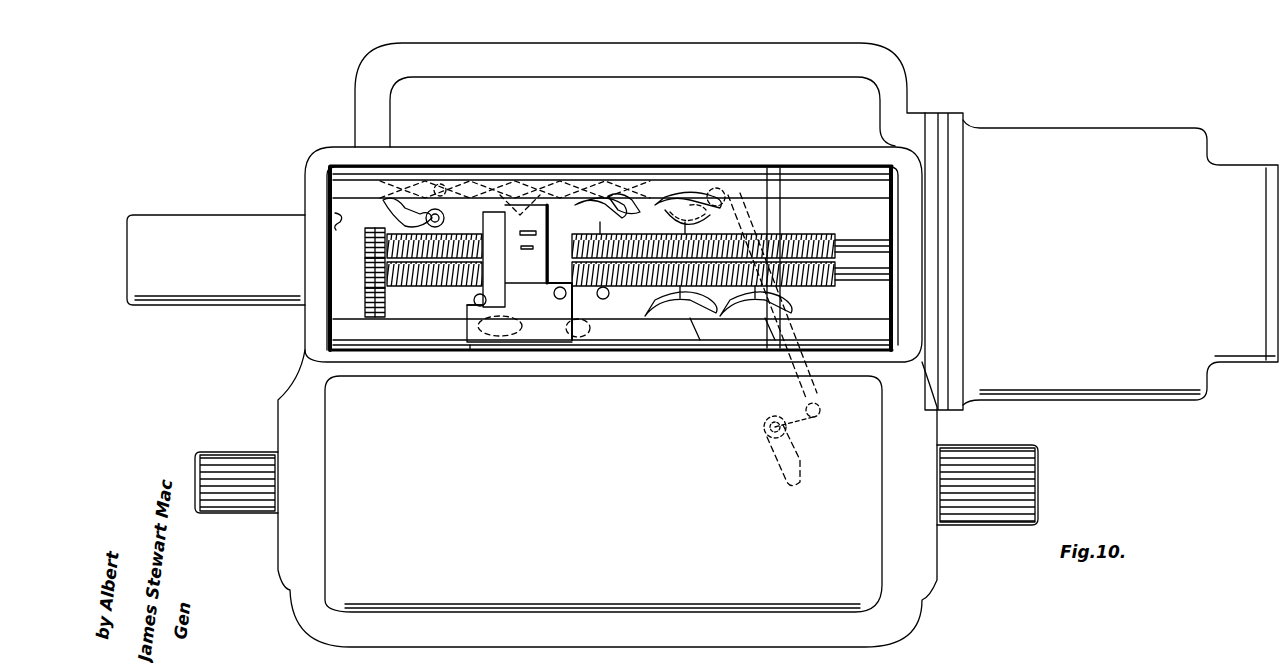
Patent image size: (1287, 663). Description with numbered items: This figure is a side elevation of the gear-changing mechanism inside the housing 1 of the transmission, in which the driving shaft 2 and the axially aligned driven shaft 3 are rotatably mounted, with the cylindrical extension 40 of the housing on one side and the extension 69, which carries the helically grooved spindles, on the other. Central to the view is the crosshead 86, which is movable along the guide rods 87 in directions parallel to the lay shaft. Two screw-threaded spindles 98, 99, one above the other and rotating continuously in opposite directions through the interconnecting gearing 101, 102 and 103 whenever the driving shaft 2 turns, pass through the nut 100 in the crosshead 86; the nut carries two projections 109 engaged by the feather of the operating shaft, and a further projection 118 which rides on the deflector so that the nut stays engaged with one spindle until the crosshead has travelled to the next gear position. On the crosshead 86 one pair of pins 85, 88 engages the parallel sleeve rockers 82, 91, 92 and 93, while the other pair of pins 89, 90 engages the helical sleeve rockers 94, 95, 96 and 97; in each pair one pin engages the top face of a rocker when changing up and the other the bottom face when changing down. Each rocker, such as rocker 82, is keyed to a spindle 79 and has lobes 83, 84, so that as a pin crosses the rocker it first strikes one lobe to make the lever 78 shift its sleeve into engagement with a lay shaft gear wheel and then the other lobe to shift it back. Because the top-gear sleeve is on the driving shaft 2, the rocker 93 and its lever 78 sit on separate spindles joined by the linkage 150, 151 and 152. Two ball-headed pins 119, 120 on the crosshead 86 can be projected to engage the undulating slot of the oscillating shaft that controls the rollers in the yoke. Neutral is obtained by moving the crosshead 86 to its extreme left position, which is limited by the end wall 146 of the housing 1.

The housing 1 is at (362, 106).
The driving shaft 2 is at (240, 500).
The driven shaft 3 is at (994, 502).
The cylindrical extension 40 is at (216, 260).
The extension of the housing 69 is at (1088, 138).
The lever 78 is at (780, 470).
The spindle 79 is at (693, 205).
The rocker 82 is at (410, 196).
The lobe 83 is at (340, 210).
The lobe 84 is at (448, 205).
The pin 85 is at (441, 184).
The crosshead 86 is at (586, 200).
The guide rods 87 is at (750, 190).
The pin 88 is at (445, 213).
The pin 89 is at (473, 300).
The pin 90 is at (565, 345).
The rocker 91 is at (515, 210).
The rocker 92 is at (620, 195).
The rocker 93 is at (657, 205).
The rocker 94 is at (505, 345).
The rocker 95 is at (585, 345).
The rocker 96 is at (675, 320).
The rocker 97 is at (752, 320).
The screw-threaded spindle 98 is at (800, 240).
The screw-threaded spindle 99 is at (812, 280).
The nut 100 is at (548, 345).
The interconnecting gearing 101 is at (366, 243).
The interconnecting gearing 102 is at (366, 270).
The interconnecting gearing 103 is at (366, 298).
The projections 109 is at (546, 215).
The projection 118 is at (528, 254).
The ball-headed pin 119 is at (528, 269).
The ball-headed pin 120 is at (610, 296).
The end wall 146 is at (335, 222).
The linkage 150 is at (718, 195).
The linkage 151 is at (800, 392).
The linkage 152 is at (818, 430).